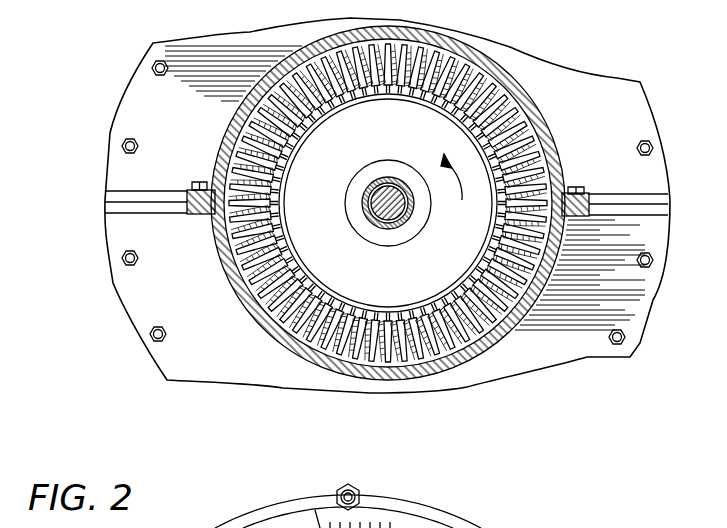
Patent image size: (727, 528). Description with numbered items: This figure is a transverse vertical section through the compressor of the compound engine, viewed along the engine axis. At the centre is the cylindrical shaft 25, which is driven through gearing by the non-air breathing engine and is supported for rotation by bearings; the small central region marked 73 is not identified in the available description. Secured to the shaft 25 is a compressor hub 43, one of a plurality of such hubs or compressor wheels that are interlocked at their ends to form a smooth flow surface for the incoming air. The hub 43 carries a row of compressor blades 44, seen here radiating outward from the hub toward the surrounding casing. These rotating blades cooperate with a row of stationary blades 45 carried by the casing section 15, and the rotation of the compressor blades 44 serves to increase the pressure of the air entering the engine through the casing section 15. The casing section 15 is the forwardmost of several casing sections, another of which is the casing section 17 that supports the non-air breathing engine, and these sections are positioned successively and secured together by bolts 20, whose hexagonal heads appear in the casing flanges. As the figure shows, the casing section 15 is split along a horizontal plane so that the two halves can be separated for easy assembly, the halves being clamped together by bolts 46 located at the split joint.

The casing section 15 is at (554, 126).
The bolts 20 is at (653, 148).
The bolts 46 is at (582, 186).
The shaft 73 is at (378, 200).
The cylindrical shaft 25 is at (412, 208).
The compressor blades 44 is at (310, 275).
The compressor hubs 43 is at (388, 203).
The stationary blades 45 is at (267, 307).
The casing section 17 is at (430, 518).